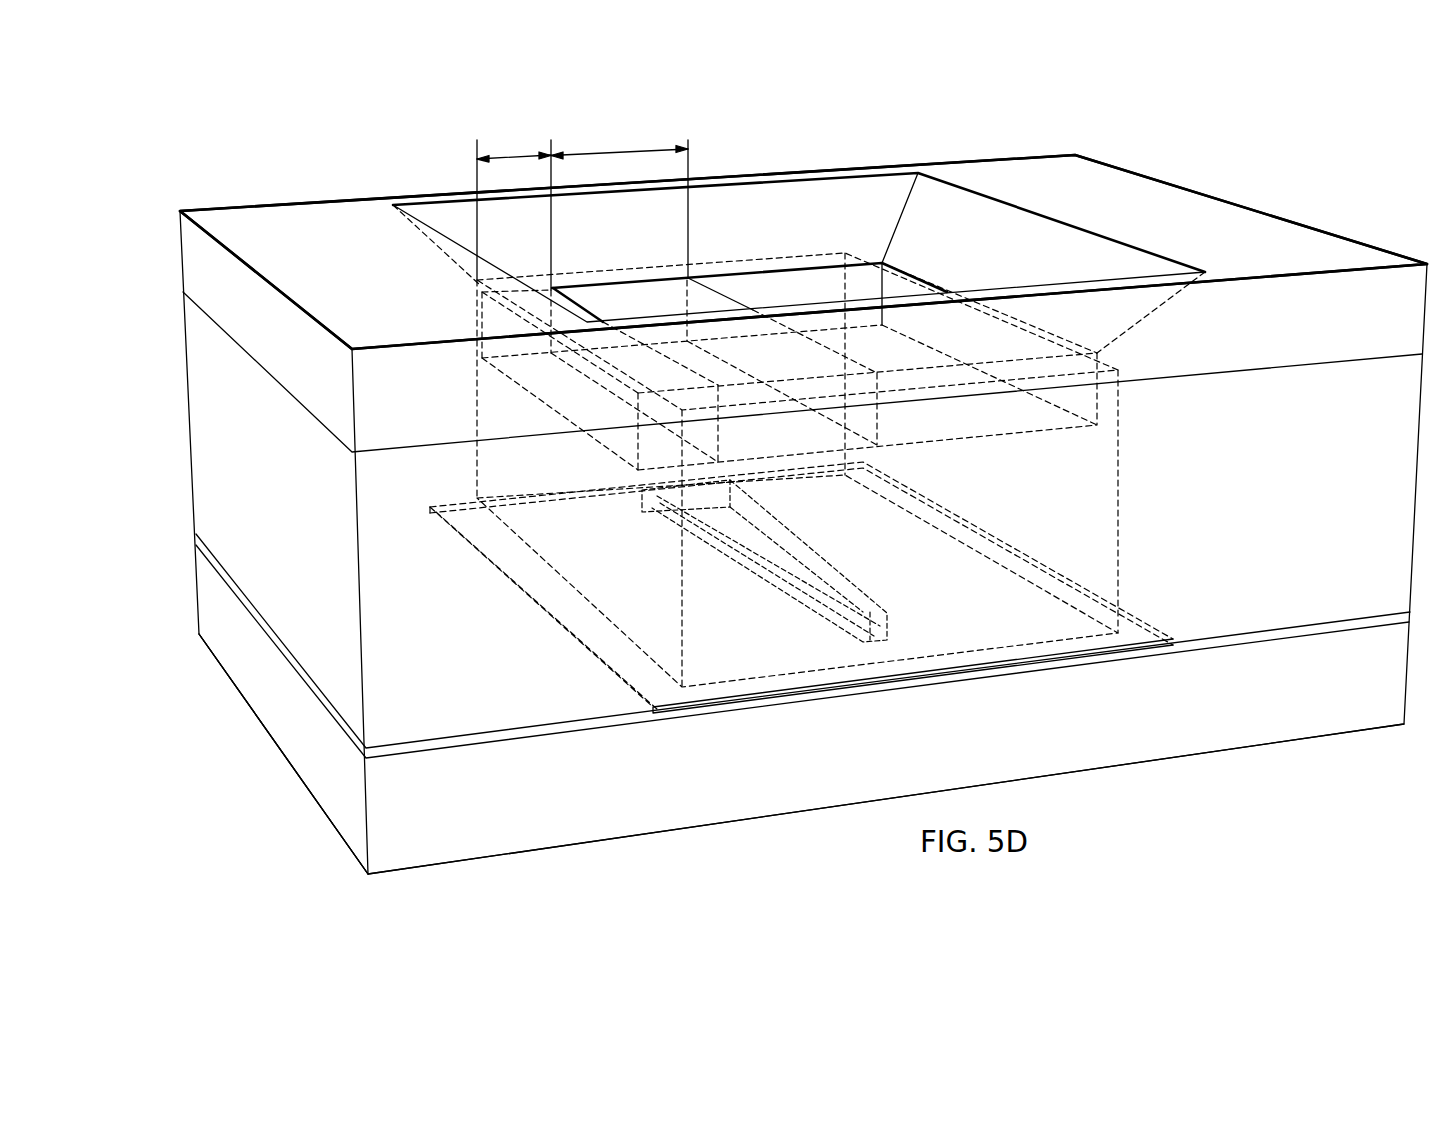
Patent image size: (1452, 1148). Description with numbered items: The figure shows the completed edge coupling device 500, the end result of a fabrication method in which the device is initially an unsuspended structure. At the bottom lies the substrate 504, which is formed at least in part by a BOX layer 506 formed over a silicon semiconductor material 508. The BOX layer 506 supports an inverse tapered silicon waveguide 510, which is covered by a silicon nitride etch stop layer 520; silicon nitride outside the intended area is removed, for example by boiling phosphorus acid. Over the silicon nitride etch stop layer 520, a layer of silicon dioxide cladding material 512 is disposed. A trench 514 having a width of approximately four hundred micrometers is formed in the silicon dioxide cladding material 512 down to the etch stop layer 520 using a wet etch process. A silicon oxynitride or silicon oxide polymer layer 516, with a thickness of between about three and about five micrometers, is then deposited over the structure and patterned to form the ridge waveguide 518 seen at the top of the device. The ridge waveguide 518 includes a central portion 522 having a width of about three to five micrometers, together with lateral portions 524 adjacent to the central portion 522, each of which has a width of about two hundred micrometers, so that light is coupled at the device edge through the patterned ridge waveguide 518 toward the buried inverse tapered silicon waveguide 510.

The edge coupling device 500 is at (377, 137).
The substrate 504 is at (246, 805).
The BOX layer 506 is at (328, 717).
The silicon semiconductor material 508 is at (327, 797).
The inverse tapered silicon waveguide 510 is at (787, 550).
The silicon dioxide cladding material 512 is at (307, 644).
The trench 514 is at (1116, 500).
The silicon oxynitride or silicon oxide polymer layer 516 is at (315, 209).
The ridge waveguide 518 is at (778, 198).
The silicon nitride etch stop layer 520 is at (457, 502).
The central portion 522 is at (620, 152).
The lateral portions 524 is at (512, 156).